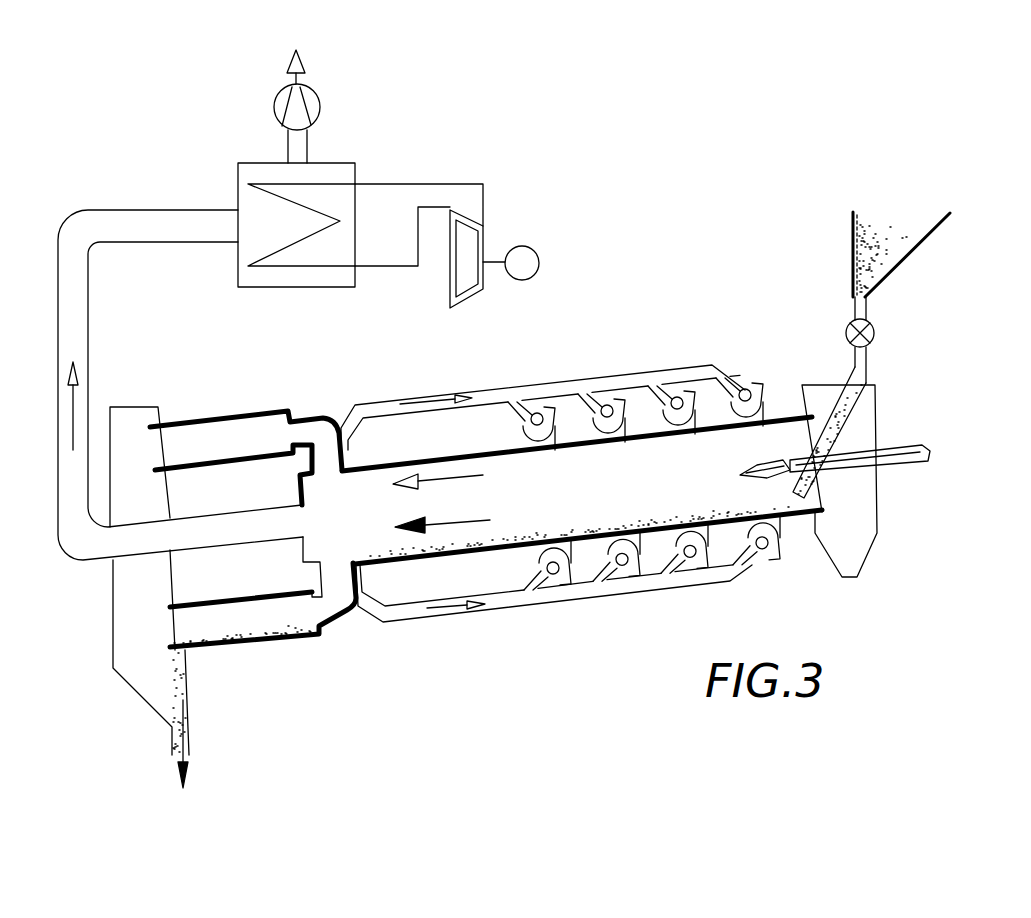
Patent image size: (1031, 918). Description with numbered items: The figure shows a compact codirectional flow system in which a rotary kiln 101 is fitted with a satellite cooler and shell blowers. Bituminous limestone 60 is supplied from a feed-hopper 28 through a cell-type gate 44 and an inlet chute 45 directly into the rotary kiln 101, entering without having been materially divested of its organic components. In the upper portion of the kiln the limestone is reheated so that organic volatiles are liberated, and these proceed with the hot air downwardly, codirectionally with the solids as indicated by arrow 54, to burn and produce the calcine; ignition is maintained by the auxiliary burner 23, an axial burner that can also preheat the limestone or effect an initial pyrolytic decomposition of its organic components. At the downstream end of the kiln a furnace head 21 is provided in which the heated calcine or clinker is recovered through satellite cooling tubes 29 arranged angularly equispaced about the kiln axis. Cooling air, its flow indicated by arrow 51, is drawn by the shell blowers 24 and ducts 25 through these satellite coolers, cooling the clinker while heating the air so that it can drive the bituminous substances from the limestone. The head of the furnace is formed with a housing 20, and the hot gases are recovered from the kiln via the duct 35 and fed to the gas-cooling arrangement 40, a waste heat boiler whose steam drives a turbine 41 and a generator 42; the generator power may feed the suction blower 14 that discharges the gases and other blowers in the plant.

The suction blower 14 is at (320, 100).
The housing 20 is at (877, 405).
The furnace head 21 is at (128, 682).
The auxiliary burner 23 is at (908, 465).
The shell blowers 24 is at (638, 570).
The ducts 25 is at (523, 609).
The feed-hopper 28 is at (917, 248).
The satellite cooling tubes 29 is at (247, 648).
The duct 35 is at (200, 385).
The gas-cooling arrangement 40 is at (355, 165).
The turbine 41 is at (487, 245).
The generator 42 is at (538, 253).
The cell-type gate 44 is at (874, 330).
The inlet chute 45 is at (868, 368).
The arrow 51 is at (447, 607).
The arrow 54 is at (462, 478).
The bituminous limestone 60 is at (875, 250).
The rotary kiln 101 is at (808, 518).